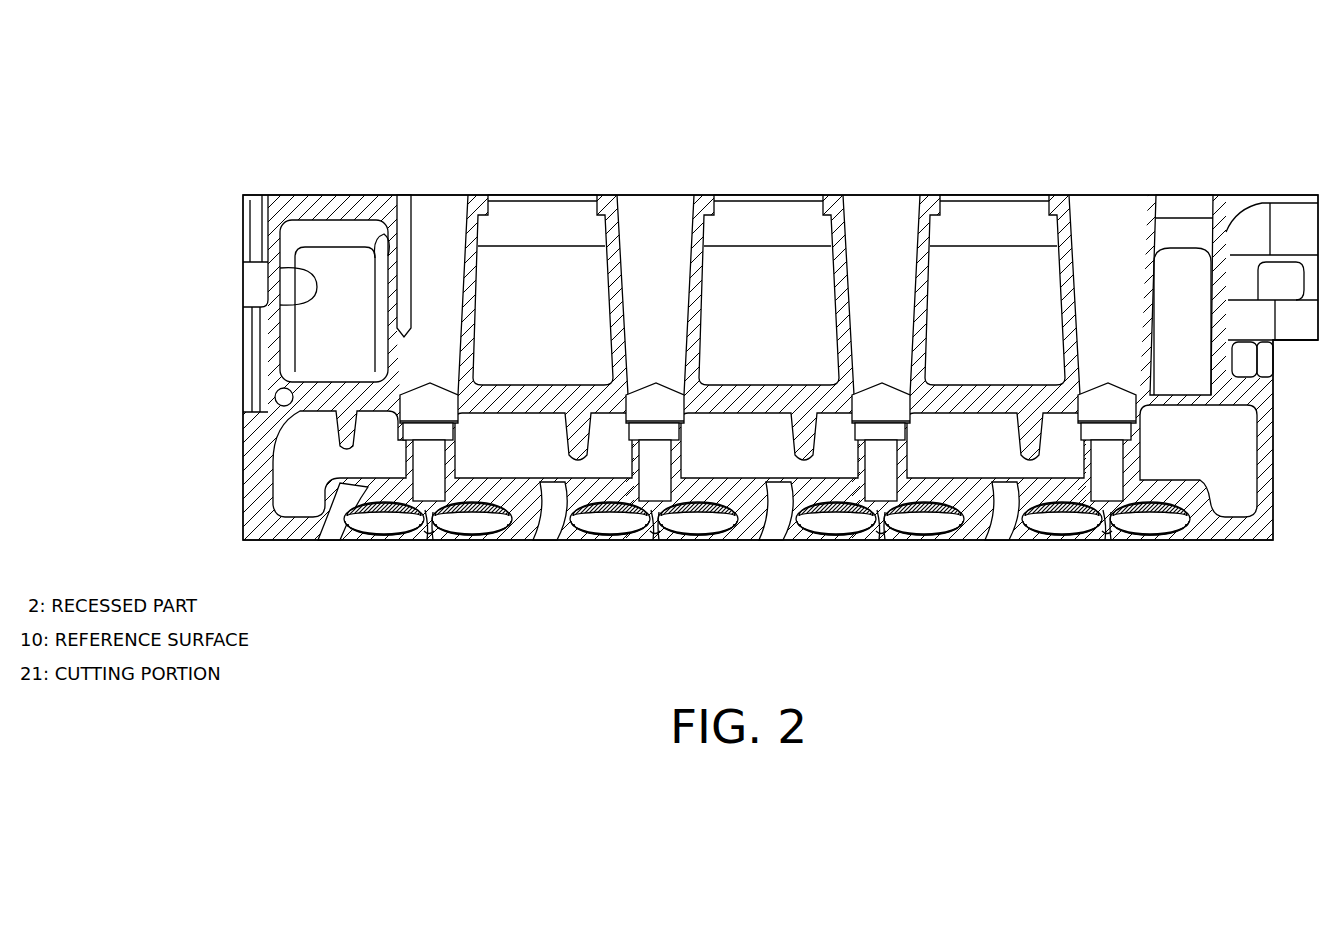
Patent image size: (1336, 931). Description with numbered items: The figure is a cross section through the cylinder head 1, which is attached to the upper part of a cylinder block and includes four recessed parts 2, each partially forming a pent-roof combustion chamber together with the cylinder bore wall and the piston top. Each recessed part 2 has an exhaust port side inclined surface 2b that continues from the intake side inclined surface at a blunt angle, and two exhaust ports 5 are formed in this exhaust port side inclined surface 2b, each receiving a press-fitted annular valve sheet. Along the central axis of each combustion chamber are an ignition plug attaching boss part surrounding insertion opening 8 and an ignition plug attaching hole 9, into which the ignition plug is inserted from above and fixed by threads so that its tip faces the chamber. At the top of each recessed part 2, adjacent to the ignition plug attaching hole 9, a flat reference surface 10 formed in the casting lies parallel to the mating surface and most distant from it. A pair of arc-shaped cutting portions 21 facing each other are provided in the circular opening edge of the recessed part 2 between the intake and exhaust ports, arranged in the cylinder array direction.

The cylinder head 1 is at (845, 94).
The recessed part 2 is at (435, 543).
The exhaust port side inclined surface 2b is at (428, 529).
The exhaust port 5 is at (382, 527).
The ignition plug attaching boss part surrounding insertion opening 8 is at (412, 380).
The ignition plug attaching hole 9 is at (425, 470).
The reference surface 10 is at (470, 506).
The cutting portion 21 is at (335, 541).